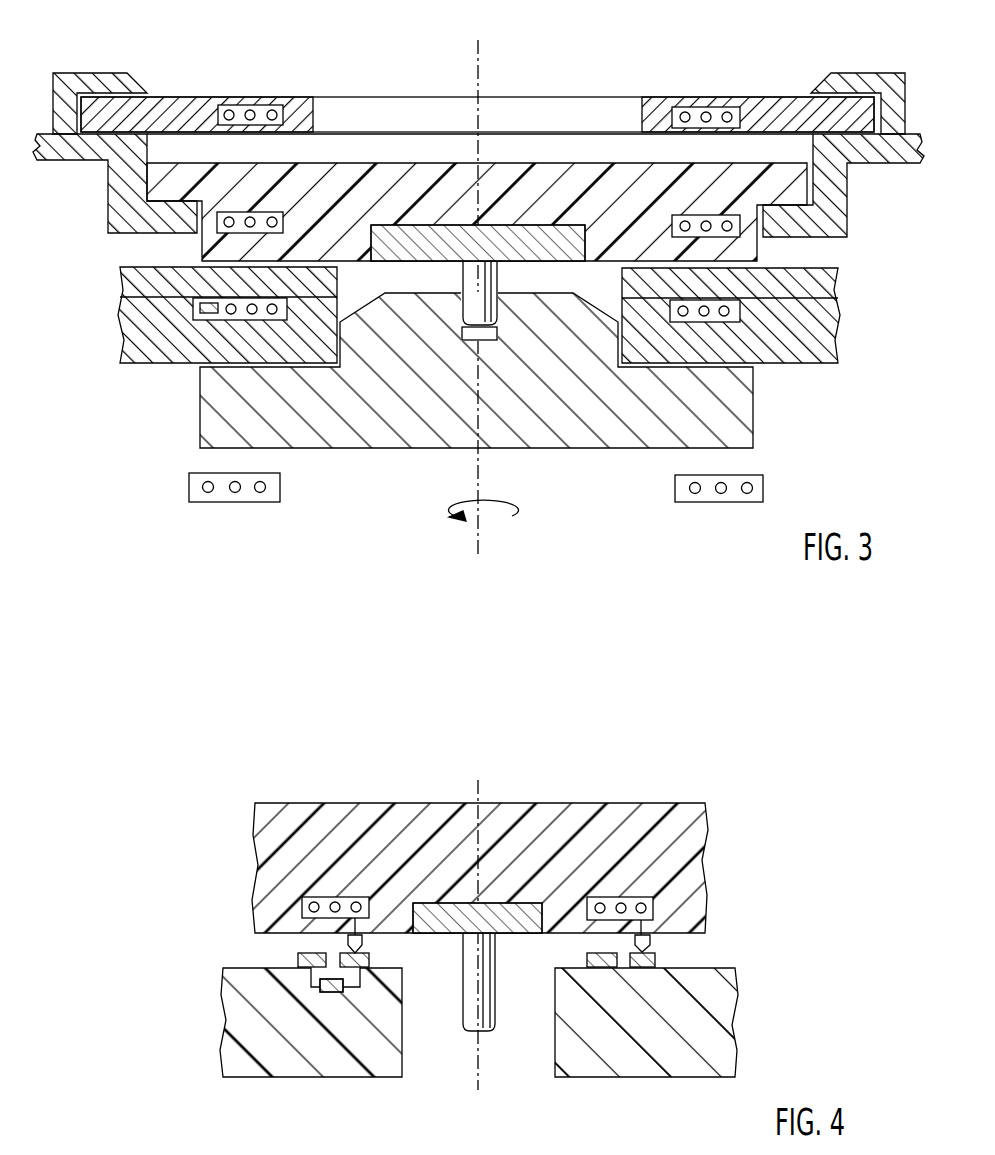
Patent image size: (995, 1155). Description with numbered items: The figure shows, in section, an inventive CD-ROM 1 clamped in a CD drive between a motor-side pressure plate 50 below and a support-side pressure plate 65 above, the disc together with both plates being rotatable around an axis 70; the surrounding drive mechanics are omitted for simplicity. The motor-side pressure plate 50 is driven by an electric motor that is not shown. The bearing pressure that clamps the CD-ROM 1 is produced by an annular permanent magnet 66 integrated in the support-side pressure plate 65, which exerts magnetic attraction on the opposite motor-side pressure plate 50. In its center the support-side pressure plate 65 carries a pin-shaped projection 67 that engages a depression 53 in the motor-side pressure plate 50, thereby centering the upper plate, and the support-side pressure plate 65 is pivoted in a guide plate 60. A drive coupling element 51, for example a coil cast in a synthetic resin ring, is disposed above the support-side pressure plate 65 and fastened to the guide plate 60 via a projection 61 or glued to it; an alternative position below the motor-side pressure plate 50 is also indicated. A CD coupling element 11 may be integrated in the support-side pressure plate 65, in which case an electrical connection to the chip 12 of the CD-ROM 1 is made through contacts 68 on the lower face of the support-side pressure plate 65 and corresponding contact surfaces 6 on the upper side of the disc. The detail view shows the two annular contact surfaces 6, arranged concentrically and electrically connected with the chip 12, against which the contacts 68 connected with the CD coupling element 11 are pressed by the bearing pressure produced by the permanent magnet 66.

In FIG. 4, the CD-ROM 1 is at (697, 1084).
In FIG. 4, the contact surfaces 6 is at (300, 960).
In FIG. 3, the CD coupling element 11 is at (684, 215).
In FIG. 4, the CD coupling element 11 is at (643, 909).
In FIG. 3, the chip 12 is at (203, 316).
In FIG. 4, the chip 12 is at (330, 993).
In FIG. 3, the motor-side pressure plate 50 is at (724, 421).
In FIG. 3, the drive coupling element 51 is at (748, 101).
In FIG. 3, the depression 53 is at (466, 342).
In FIG. 3, the guide plate 60 is at (836, 196).
In FIG. 3, the projection 61 is at (873, 73).
In FIG. 3, the support-side pressure plate 65 is at (735, 247).
In FIG. 4, the support-side pressure plate 65 is at (657, 838).
In FIG. 3, the annular permanent magnet 66 is at (528, 235).
In FIG. 4, the annular permanent magnet 66 is at (440, 920).
In FIG. 3, the pin-shaped projection 67 is at (500, 282).
In FIG. 4, the pin-shaped projection 67 is at (485, 970).
In FIG. 4, the contacts 68 is at (651, 940).
In FIG. 3, the axis 70 is at (478, 537).